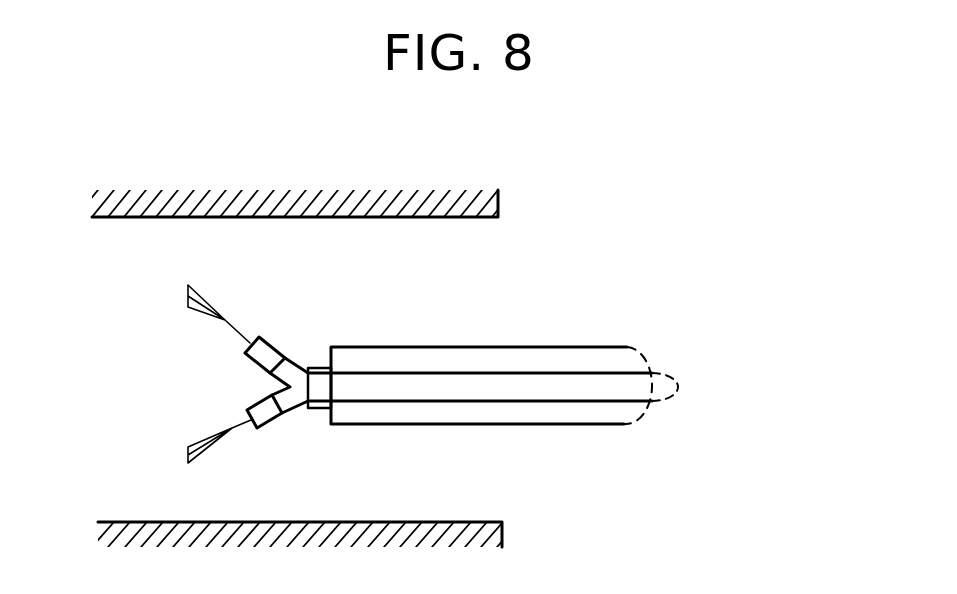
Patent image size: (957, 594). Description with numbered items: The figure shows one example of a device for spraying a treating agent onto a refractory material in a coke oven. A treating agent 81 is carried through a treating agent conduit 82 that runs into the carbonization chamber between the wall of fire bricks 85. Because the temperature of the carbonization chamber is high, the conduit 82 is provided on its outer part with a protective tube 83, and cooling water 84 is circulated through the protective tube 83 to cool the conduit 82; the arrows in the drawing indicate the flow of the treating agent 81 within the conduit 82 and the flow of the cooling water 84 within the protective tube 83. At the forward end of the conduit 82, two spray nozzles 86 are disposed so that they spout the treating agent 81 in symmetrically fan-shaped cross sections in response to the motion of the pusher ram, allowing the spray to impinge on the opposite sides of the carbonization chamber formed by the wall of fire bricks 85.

The treating agent 81 is at (662, 385).
The treating agent conduit 82 is at (585, 400).
The protective tube 83 is at (545, 346).
The cooling water 84 is at (530, 360).
The wall of fire bricks 85 is at (233, 193).
The spray nozzles 86 is at (268, 412).